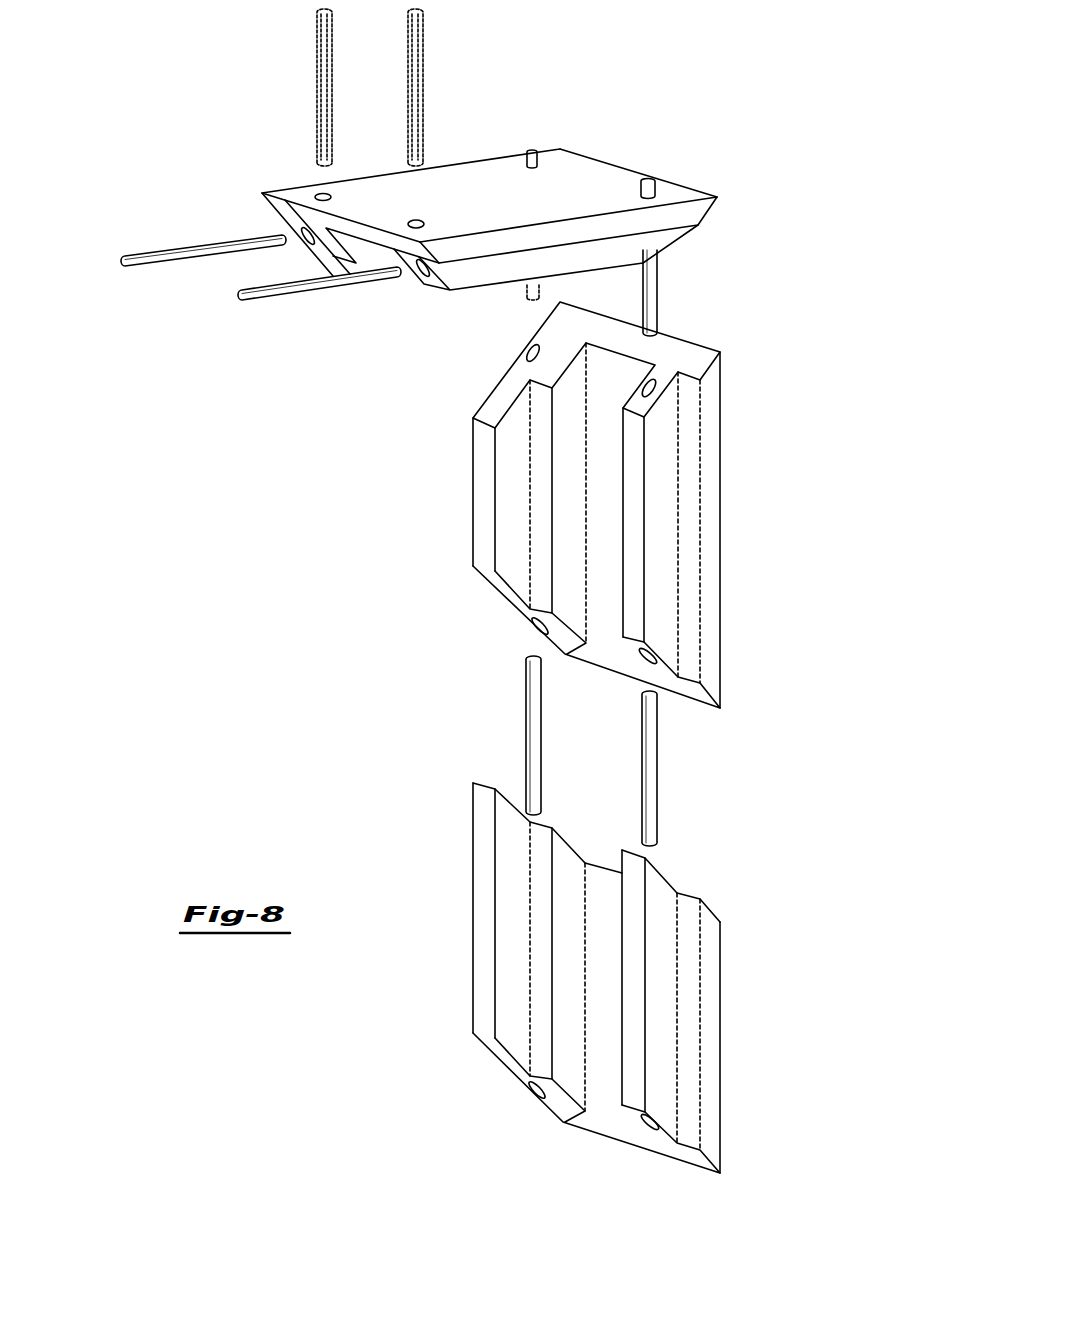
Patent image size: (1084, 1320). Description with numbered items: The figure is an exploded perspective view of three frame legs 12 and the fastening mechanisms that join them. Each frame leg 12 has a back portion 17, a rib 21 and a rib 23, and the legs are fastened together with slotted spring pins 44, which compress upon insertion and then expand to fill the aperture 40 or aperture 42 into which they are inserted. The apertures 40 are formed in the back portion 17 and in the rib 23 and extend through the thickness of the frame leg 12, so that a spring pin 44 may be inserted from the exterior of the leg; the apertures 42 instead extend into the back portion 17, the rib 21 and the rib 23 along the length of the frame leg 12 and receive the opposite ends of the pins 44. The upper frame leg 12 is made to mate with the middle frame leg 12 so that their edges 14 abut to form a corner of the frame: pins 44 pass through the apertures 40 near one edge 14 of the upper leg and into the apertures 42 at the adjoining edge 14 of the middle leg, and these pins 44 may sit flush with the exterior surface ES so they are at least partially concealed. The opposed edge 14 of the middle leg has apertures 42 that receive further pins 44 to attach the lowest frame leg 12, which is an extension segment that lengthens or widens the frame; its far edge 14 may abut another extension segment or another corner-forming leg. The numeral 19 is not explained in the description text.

The frame leg 12 is at (547, 648).
The edge 14 is at (348, 234).
The back portion 17 is at (408, 285).
The second side flange 19 is at (600, 172).
The rib 21 is at (360, 272).
The rib 23 is at (622, 247).
The exterior surface ES is at (545, 206).
The aperture 40 is at (417, 222).
The aperture 42 is at (300, 233).
The slotted spring pin 44 is at (317, 93).